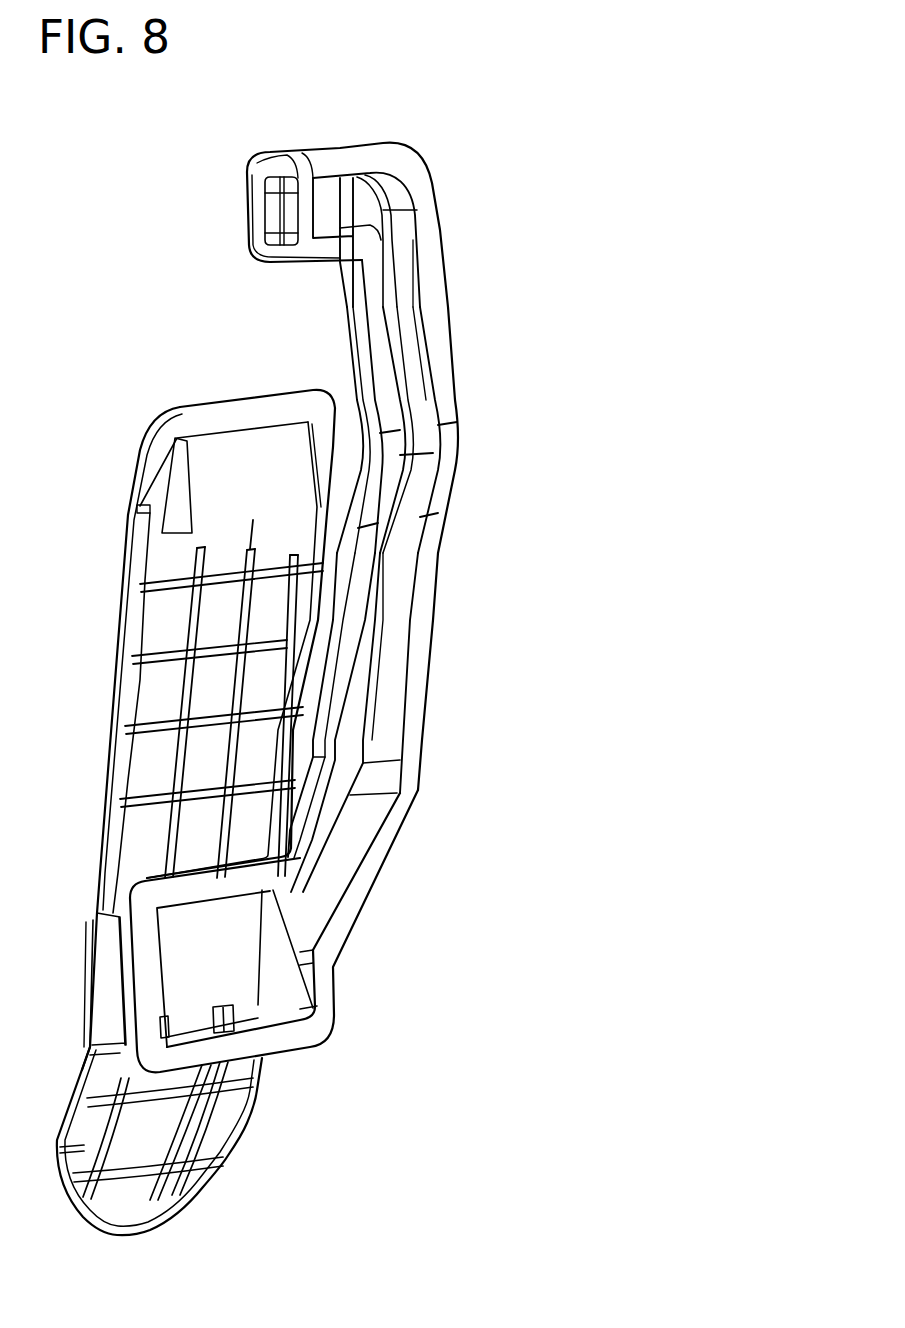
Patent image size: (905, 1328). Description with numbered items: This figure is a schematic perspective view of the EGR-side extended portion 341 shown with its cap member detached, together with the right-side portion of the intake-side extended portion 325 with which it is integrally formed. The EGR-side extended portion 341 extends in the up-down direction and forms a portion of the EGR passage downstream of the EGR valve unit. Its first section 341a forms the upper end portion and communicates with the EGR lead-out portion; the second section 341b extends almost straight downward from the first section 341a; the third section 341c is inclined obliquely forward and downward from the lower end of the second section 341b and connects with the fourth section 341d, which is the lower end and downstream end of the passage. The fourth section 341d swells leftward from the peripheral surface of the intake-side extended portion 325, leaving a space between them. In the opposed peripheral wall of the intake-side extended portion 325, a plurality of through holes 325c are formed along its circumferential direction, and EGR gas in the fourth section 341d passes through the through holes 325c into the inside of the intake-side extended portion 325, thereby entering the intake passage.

The intake-side extended portion 325 is at (193, 786).
The through holes 325c is at (260, 1005).
The EGR-side extended portion 341 is at (366, 604).
The first section 341a is at (318, 174).
The second section 341b is at (448, 333).
The third section 341c is at (430, 605).
The fourth section 341d is at (300, 1040).